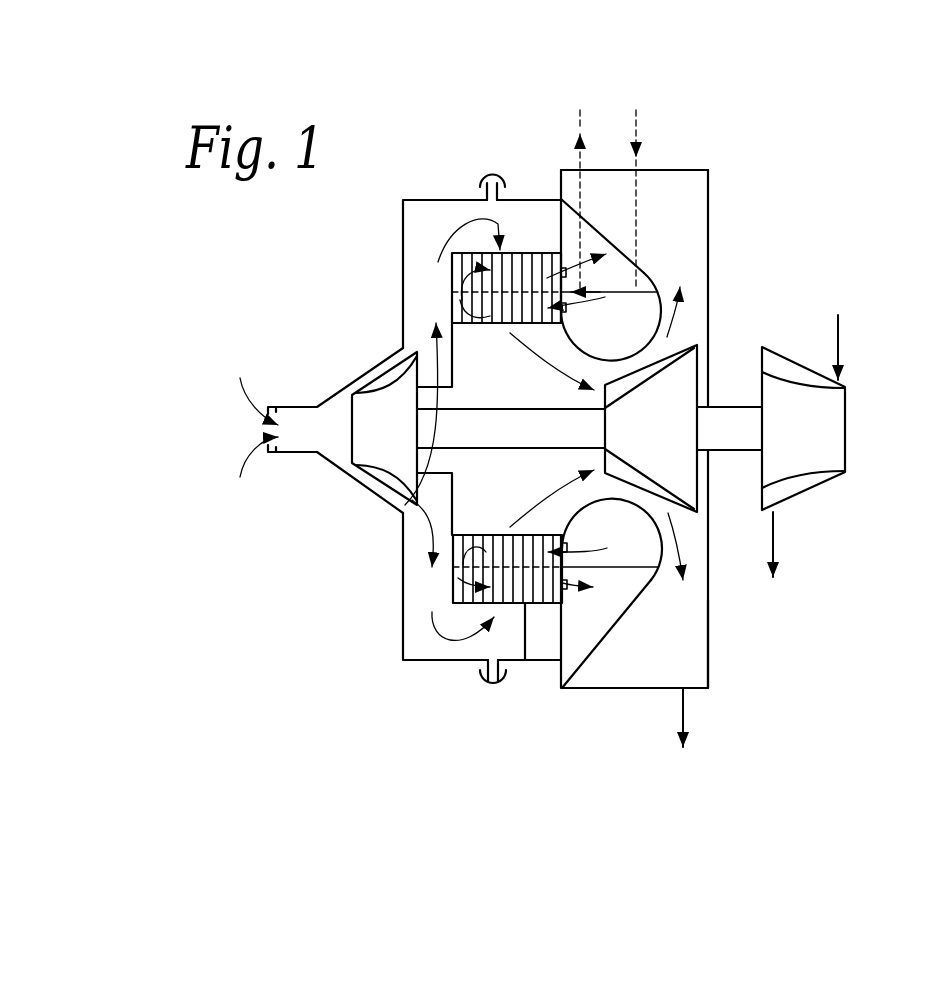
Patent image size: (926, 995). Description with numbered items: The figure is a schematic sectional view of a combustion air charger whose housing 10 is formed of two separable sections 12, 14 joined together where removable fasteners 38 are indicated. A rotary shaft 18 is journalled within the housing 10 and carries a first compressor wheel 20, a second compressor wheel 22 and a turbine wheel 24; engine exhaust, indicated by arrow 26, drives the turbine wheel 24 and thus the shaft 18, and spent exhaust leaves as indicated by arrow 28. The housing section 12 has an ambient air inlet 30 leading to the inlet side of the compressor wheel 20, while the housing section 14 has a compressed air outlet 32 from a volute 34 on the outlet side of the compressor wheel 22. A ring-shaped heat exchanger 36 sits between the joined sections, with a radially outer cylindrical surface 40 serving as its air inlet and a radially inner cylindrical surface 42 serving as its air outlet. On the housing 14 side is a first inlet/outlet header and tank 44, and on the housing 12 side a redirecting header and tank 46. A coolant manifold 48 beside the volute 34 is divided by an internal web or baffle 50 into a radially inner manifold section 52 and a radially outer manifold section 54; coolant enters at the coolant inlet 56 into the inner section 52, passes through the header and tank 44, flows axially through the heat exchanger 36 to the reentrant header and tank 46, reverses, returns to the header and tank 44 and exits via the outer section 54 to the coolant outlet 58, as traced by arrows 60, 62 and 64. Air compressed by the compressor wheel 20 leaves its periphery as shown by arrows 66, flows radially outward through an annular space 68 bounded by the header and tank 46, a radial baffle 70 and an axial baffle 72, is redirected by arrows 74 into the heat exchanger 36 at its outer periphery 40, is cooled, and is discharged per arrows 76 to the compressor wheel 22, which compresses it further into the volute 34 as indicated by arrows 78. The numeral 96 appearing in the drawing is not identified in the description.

The housing 10 is at (381, 700).
The housing section 12 is at (403, 620).
The housing section 14 is at (610, 689).
The rotary shaft 18 is at (508, 448).
The first compressor wheel 20 is at (366, 452).
The second compressor wheel 22 is at (693, 372).
The turbine wheel 24 is at (830, 421).
The arrow 26 is at (843, 340).
The arrow 28 is at (774, 528).
The ambient air inlet 30 is at (305, 430).
The compressed air outlet 32 is at (684, 708).
The volute 34 is at (690, 658).
The heat exchanger 36 is at (531, 253).
The removable fasteners 38 is at (500, 684).
The radially outer cylindrical surface 40 is at (526, 605).
The radially inner cylindrical surface 42 is at (472, 533).
The first inlet/outlet header and tank 44 is at (576, 290).
The redirecting header and tank 46 is at (444, 299).
The coolant manifold 48 is at (648, 266).
The internal web or baffle 50 is at (646, 575).
The radially inner manifold section 52 is at (616, 520).
The radially outer manifold section 54 is at (602, 612).
The coolant inlet 56 is at (656, 204).
The coolant outlet 58 is at (580, 118).
The arrows 60 is at (613, 297).
The arrows 62 is at (481, 318).
The arrows 64 is at (572, 268).
The arrows 66 is at (403, 330).
The annular space 68 is at (437, 262).
The radial baffle 70 is at (452, 512).
The axial baffle 72 is at (446, 470).
The arrows 74 is at (457, 221).
The arrows 76 is at (548, 365).
The arrows 78 is at (682, 306).
The exhaust duct 96 is at (917, 161).